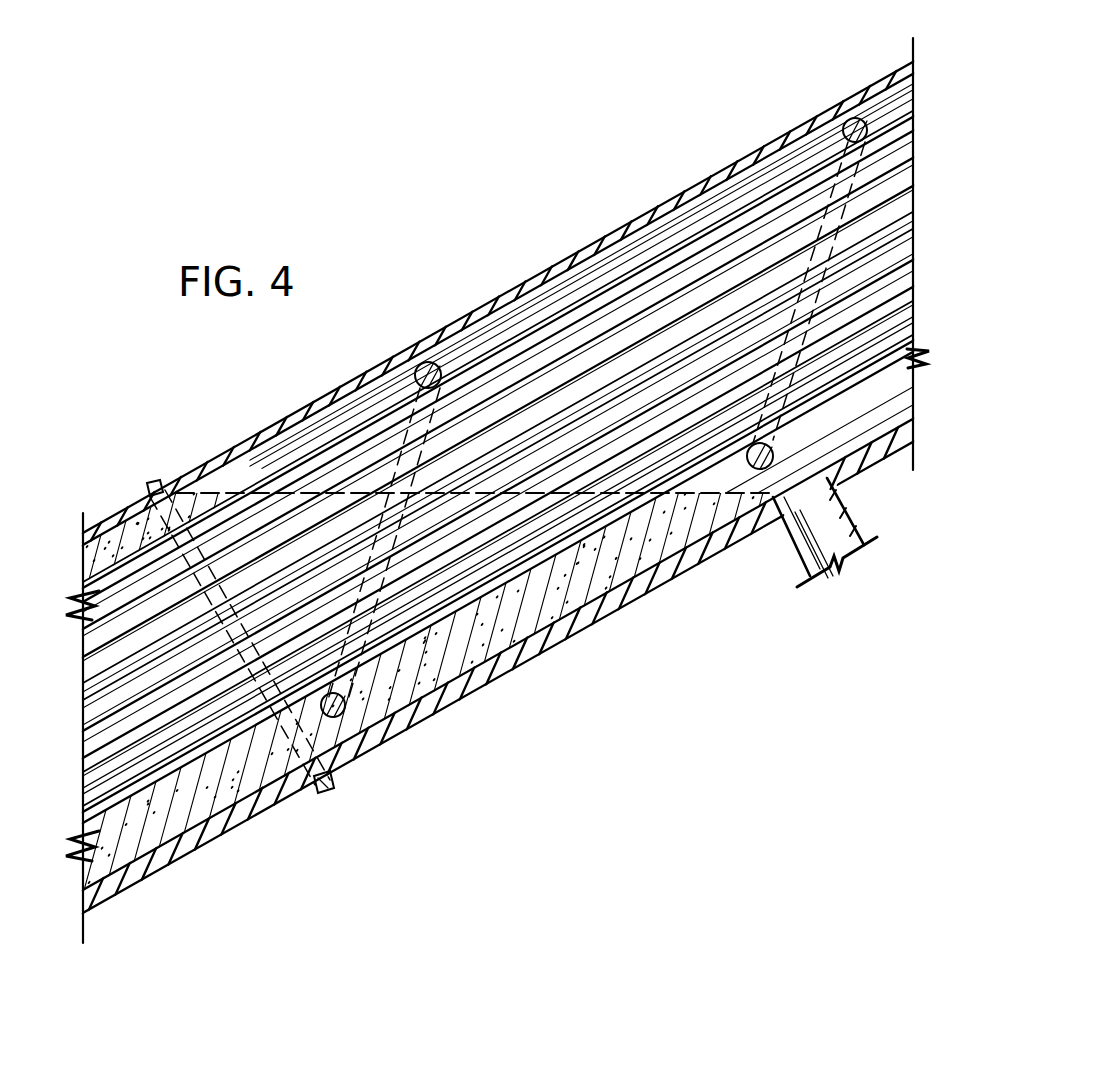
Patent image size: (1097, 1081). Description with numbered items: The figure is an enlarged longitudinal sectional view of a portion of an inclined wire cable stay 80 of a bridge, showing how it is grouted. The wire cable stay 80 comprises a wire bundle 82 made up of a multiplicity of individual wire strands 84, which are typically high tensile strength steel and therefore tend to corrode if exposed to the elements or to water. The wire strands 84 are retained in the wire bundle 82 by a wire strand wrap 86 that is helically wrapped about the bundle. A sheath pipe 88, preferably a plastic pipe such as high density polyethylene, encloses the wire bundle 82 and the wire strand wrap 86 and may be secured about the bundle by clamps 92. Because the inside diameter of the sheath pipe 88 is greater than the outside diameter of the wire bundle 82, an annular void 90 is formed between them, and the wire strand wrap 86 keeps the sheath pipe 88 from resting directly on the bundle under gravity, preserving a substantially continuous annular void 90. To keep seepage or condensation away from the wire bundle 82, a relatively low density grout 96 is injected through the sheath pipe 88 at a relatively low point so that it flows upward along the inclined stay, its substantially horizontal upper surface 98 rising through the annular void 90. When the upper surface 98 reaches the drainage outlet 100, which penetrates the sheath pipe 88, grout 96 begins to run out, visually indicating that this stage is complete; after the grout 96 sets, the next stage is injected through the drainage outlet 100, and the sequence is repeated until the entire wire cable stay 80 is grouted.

The wire cable stay 80 is at (248, 394).
The wire bundle 82 is at (581, 275).
The wire strands 84 is at (498, 386).
The wire strand wrap 86 is at (810, 130).
The sheath pipe 88 is at (498, 303).
The annular void 90 is at (587, 436).
The clamps 92 is at (338, 782).
The grout 96 is at (498, 666).
The upper surface 98 is at (700, 487).
The drainage outlet 100 is at (787, 530).